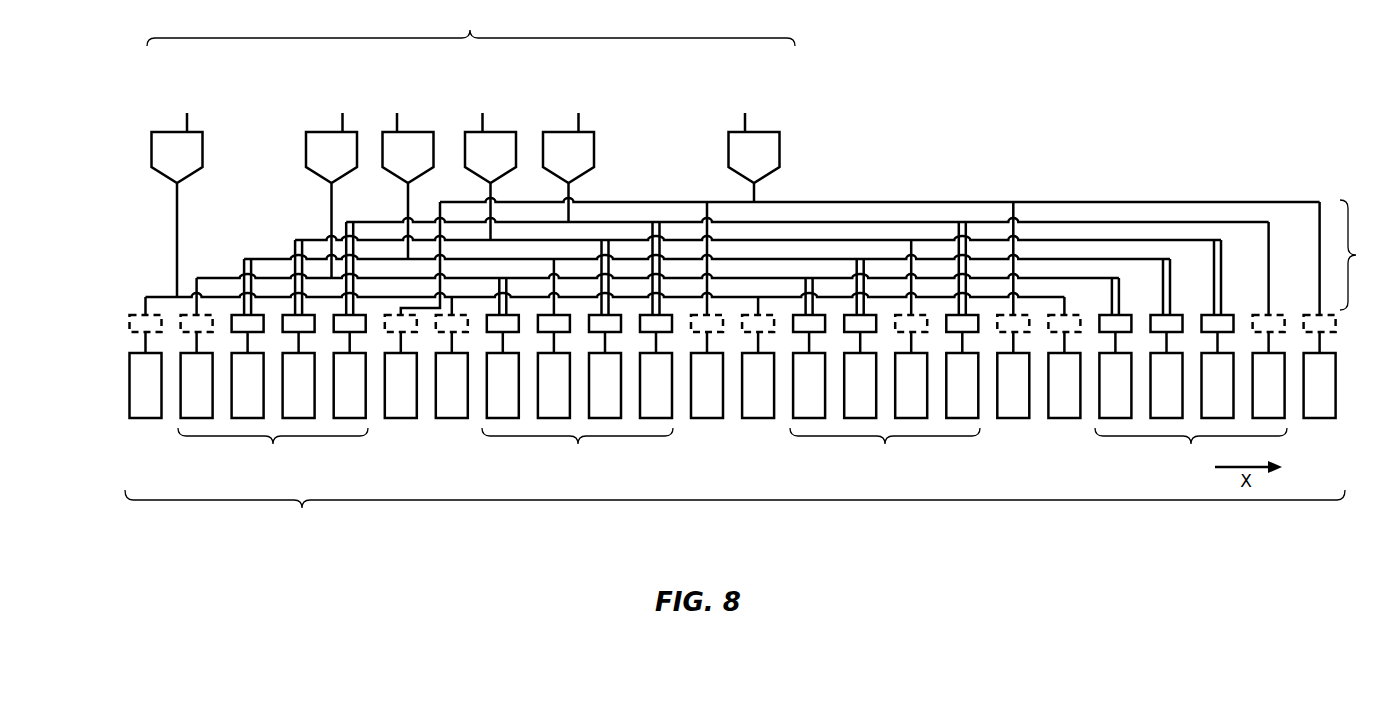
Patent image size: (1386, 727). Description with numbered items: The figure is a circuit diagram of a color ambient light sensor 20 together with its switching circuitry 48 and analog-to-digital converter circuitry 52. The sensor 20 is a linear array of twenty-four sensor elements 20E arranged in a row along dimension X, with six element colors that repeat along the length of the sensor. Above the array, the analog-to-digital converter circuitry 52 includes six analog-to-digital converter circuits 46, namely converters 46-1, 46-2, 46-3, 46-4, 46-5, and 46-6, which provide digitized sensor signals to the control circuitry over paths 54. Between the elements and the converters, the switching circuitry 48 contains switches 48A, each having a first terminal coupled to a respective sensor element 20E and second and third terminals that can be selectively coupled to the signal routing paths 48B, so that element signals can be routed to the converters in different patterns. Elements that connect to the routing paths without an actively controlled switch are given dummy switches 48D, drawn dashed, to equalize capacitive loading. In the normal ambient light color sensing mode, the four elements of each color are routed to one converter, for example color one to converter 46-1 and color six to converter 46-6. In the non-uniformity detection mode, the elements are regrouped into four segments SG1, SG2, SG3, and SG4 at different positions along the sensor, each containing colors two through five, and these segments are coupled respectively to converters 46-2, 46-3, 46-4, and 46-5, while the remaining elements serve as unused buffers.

The sensor 20 is at (735, 435).
The sensor elements 20E is at (150, 418).
The analog-to-digital converter circuits 46 is at (131, 150).
The analog-to-digital converter circuit 46-1 is at (174, 131).
The analog-to-digital converter circuit 46-2 is at (322, 131).
The analog-to-digital converter circuit 46-3 is at (413, 131).
The analog-to-digital converter circuit 46-4 is at (496, 131).
The analog-to-digital converter circuit 46-5 is at (566, 131).
The analog-to-digital converter circuit 46-6 is at (734, 131).
The switching circuitry 48 is at (121, 324).
The switches 48A is at (345, 315).
The supply lines 48B is at (766, 254).
The dummy switches 48D is at (186, 317).
The analog-to-digital converter circuitry 52 is at (471, 27).
The path 54 is at (190, 121).
The segment SG1 is at (273, 451).
The segment SG2 is at (577, 447).
The segment SG3 is at (885, 449).
The segment SG4 is at (1191, 450).